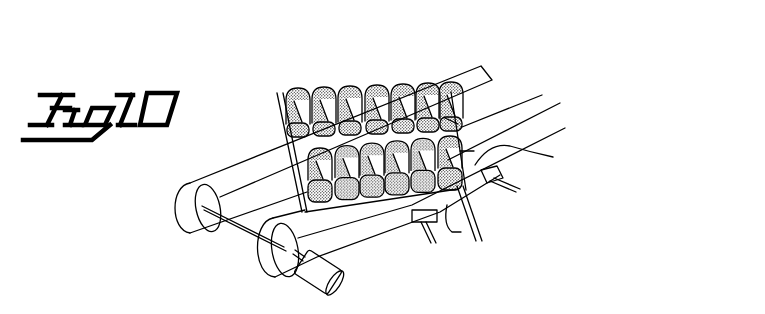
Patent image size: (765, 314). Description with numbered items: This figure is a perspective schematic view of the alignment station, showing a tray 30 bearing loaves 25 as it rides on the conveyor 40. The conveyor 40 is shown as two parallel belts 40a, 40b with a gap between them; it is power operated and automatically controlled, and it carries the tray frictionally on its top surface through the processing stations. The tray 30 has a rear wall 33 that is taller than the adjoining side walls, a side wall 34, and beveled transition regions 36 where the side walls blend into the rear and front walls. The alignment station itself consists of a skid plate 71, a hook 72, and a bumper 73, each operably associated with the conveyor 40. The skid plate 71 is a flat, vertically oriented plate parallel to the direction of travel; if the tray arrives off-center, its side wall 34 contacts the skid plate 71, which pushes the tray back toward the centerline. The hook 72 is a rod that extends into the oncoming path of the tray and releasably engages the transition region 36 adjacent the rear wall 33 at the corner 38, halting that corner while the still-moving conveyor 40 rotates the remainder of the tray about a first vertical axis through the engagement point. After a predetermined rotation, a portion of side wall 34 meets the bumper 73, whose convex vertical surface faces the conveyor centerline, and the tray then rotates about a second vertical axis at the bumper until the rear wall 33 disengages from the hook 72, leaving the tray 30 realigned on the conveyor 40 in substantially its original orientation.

The loaves 25 is at (373, 87).
The tray 30 is at (277, 103).
The rear wall 33 is at (452, 120).
The side wall 34 is at (465, 231).
The transition regions 36 is at (528, 157).
The corner 38 is at (467, 147).
The conveyor 40 is at (197, 244).
The belt 40a is at (543, 97).
The belt 40b is at (460, 72).
The skid plate 71 is at (518, 180).
The hook 72 is at (483, 232).
The bumper 73 is at (413, 228).